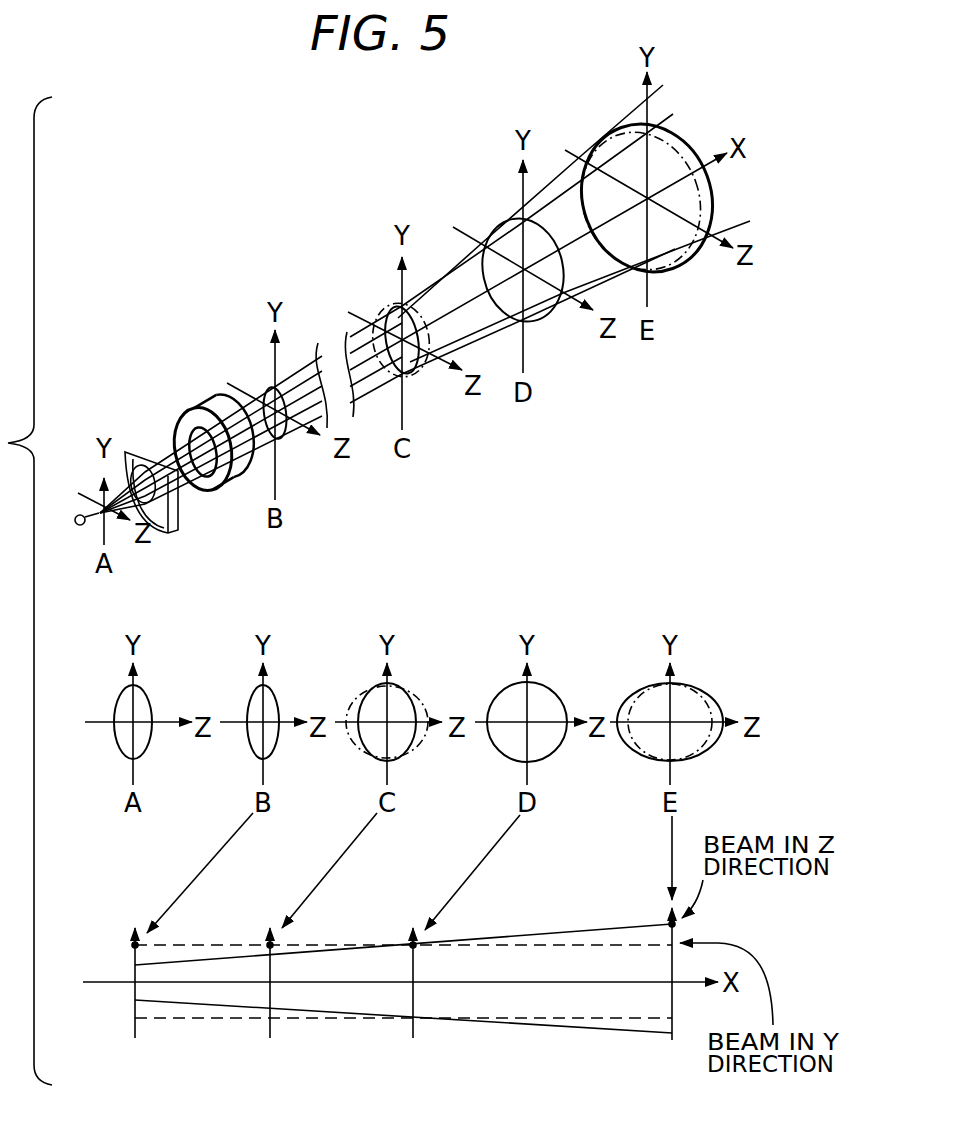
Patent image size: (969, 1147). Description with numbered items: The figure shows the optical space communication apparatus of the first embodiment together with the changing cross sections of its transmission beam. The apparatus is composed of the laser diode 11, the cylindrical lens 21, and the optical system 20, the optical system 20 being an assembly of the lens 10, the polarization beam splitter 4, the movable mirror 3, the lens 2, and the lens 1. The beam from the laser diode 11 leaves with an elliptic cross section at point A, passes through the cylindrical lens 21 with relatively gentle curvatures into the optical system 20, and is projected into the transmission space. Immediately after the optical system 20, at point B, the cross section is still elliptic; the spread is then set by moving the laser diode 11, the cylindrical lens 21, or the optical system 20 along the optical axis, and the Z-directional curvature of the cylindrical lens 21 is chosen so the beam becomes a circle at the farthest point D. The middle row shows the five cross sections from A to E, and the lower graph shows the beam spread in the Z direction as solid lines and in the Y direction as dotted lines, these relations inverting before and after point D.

The laser diode 11 is at (78, 514).
The cylindrical lens 21 is at (127, 452).
The optical system 20 is at (207, 408).
The lens 10 is at (210, 444).
The polarization beam splitter 4 is at (210, 444).
The movable mirror 3 is at (210, 444).
The lens 2 is at (210, 444).
The lens 1 is at (210, 444).